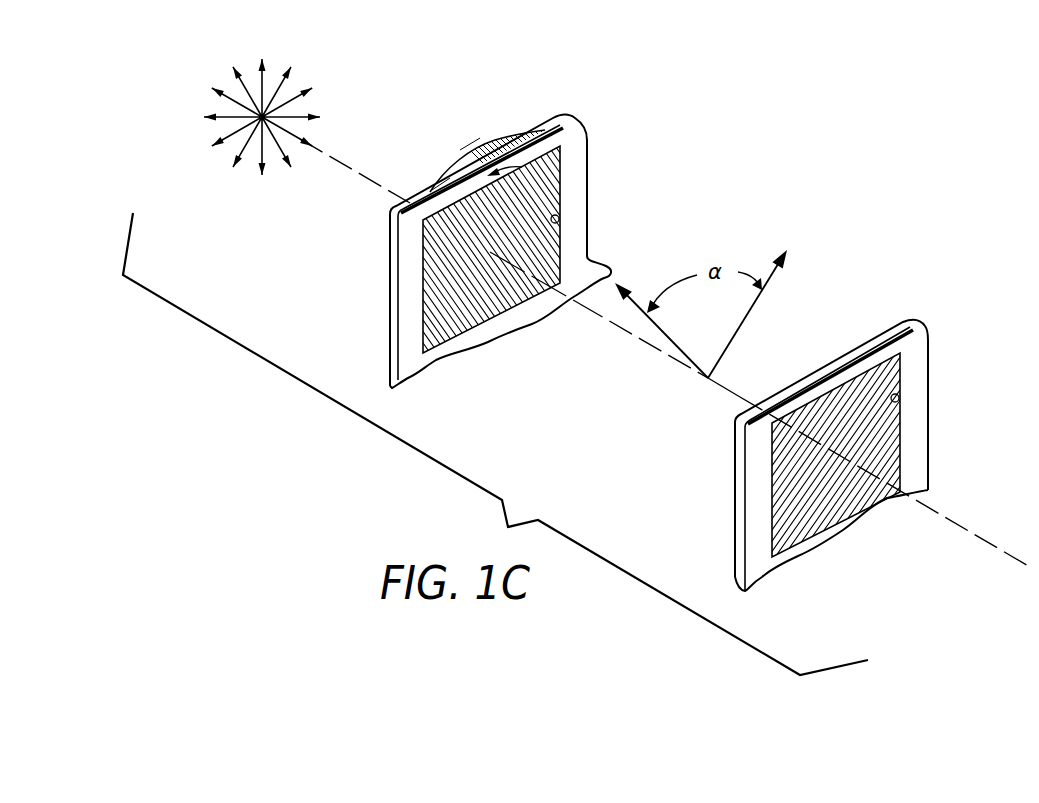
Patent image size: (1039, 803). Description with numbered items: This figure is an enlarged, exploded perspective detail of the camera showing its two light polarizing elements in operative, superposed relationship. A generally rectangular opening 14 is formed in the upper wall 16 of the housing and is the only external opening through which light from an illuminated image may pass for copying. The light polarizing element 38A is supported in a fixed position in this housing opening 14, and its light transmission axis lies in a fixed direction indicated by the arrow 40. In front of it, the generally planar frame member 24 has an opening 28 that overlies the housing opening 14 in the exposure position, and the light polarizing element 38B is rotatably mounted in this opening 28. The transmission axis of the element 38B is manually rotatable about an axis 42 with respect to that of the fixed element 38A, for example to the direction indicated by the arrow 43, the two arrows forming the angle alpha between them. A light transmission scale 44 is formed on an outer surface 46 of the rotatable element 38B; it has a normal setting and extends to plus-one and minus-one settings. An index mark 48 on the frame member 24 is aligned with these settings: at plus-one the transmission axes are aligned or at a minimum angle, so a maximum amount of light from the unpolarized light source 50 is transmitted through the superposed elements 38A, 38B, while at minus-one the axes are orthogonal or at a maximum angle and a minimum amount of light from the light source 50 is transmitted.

The light source 50 is at (340, 66).
The axis 42 is at (329, 155).
The frame member 24 is at (390, 287).
The index mark 48 is at (537, 183).
The opening 28 is at (559, 218).
The light transmission scale 44 is at (466, 128).
The light polarizing element 38B is at (500, 136).
The outer surface 46 is at (446, 177).
The arrow 43 is at (648, 325).
The arrow 40 is at (748, 316).
The upper wall 16 is at (735, 497).
The light polarizing element 38A is at (877, 450).
The opening 14 is at (899, 397).